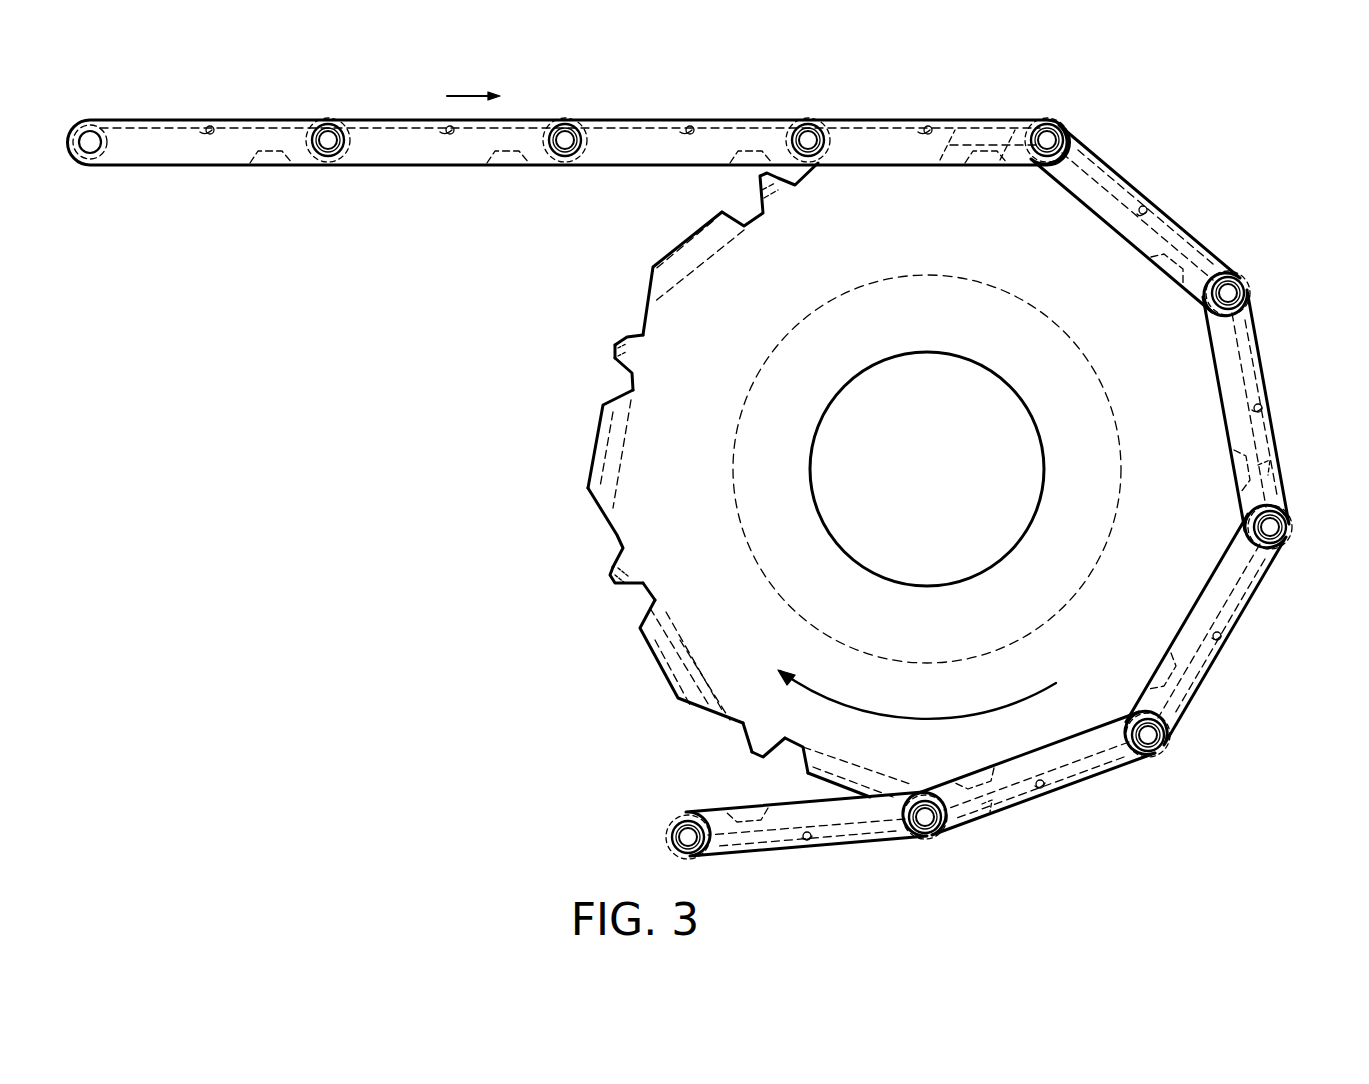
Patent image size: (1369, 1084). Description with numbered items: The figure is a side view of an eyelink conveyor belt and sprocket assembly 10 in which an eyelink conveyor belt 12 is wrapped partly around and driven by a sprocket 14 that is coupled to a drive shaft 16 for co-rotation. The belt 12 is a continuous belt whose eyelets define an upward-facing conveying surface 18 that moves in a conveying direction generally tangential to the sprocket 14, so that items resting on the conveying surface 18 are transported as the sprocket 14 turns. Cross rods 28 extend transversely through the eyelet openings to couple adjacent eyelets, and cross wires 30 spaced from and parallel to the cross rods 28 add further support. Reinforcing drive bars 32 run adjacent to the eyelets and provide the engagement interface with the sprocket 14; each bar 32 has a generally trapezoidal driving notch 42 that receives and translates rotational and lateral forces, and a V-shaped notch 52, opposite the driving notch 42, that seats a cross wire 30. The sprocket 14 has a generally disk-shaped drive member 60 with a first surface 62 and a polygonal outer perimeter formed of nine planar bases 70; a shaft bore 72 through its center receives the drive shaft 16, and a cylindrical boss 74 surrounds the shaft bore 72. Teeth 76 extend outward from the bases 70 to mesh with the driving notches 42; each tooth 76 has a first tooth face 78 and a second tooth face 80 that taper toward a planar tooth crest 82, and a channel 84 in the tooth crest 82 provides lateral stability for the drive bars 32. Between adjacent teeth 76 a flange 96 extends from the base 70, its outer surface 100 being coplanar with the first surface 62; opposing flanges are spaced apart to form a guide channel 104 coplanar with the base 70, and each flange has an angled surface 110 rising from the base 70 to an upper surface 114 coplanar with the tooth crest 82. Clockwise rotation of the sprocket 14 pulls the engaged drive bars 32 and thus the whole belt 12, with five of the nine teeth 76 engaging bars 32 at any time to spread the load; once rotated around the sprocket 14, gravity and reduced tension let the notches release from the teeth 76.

The eyelink conveyor belt and sprocket assembly 10 is at (128, 80).
The eyelink conveyor belt 12 is at (947, 110).
The sprocket 14 is at (1150, 298).
The drive shaft 16 is at (835, 528).
The conveying surface 18 is at (265, 120).
The cross rod 28 is at (328, 135).
The cross wire 30 is at (213, 136).
The reinforcing drive bar 32 is at (762, 135).
The driving notch 42 is at (272, 163).
The V-shaped notch 52 is at (214, 128).
The drive member 60 is at (1172, 722).
The first surface 62 is at (808, 254).
The planar base 70 is at (615, 545).
The shaft bore 72 is at (1012, 550).
The cylindrical boss 74 is at (922, 278).
The tooth 76 is at (615, 352).
The first tooth face 78 is at (633, 336).
The second tooth face 80 is at (630, 373).
The tooth crest 82 is at (612, 583).
The channel 84 is at (760, 178).
The flange 96 is at (688, 237).
The outer surface 100 is at (660, 660).
The guide channel 104 is at (660, 700).
The angled surface 110 is at (800, 762).
The upper surface 114 is at (835, 790).